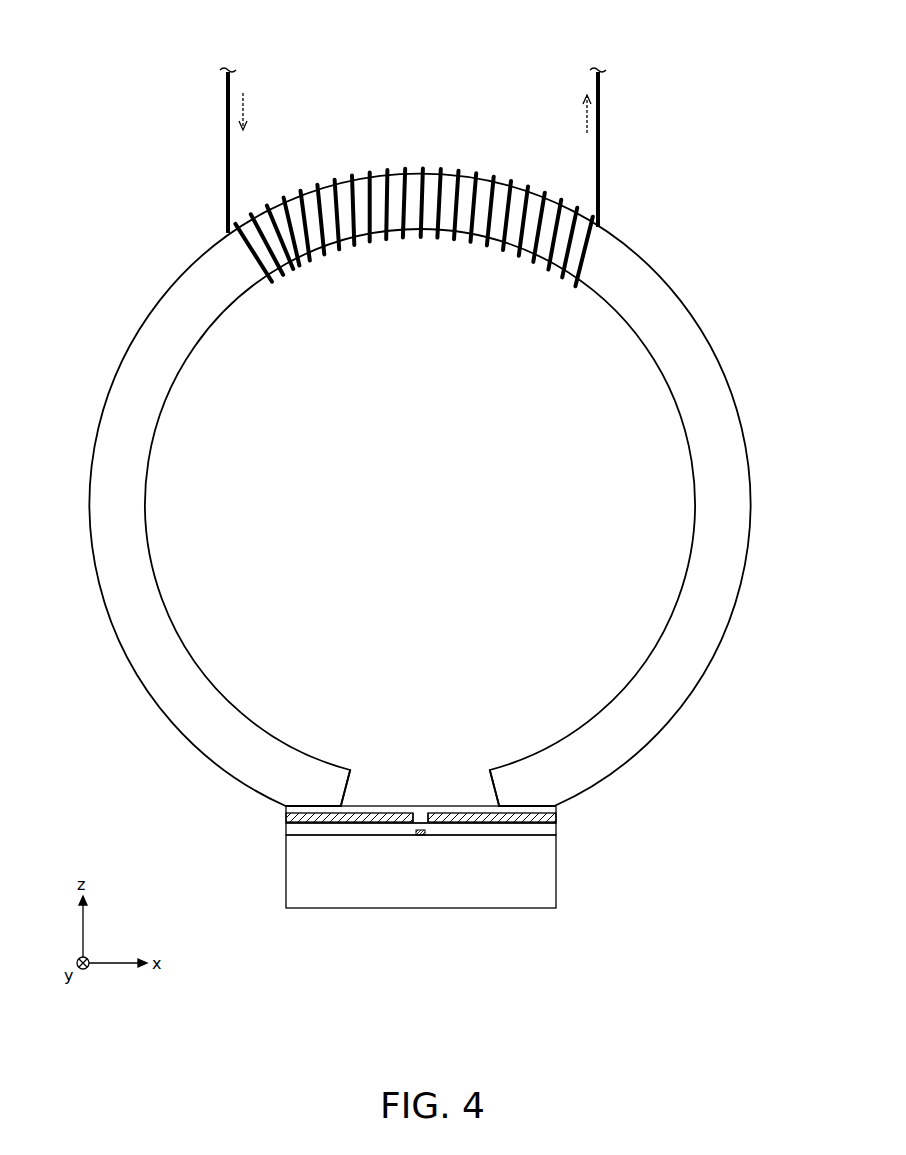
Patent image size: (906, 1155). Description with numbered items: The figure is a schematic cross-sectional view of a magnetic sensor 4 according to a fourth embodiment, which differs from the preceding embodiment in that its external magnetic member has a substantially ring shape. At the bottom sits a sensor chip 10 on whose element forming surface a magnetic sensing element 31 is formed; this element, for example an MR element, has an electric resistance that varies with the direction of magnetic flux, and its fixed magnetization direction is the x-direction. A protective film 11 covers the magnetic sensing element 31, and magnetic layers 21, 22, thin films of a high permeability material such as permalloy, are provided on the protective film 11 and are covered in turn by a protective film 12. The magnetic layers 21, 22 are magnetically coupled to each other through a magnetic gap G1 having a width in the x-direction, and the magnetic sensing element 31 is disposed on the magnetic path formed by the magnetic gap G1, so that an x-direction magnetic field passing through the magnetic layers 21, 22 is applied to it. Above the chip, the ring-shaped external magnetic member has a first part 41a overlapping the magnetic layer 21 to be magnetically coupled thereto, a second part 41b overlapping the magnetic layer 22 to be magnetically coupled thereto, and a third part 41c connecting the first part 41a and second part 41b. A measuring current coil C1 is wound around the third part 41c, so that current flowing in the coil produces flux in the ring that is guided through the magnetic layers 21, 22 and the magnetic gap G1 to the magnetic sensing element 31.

The magnetic sensor 4 is at (746, 42).
The third part 41c is at (634, 271).
The first part 41a is at (273, 763).
The second part 41b is at (547, 770).
The measuring current coil C1 is at (412, 222).
The magnetic gap G1 is at (421, 800).
The magnetic layer 21 is at (358, 813).
The magnetic layer 22 is at (467, 813).
The protective film 12 is at (556, 810).
The protective film 11 is at (545, 831).
The sensor chip 10 is at (545, 873).
The magnetic sensing element 31 is at (422, 838).